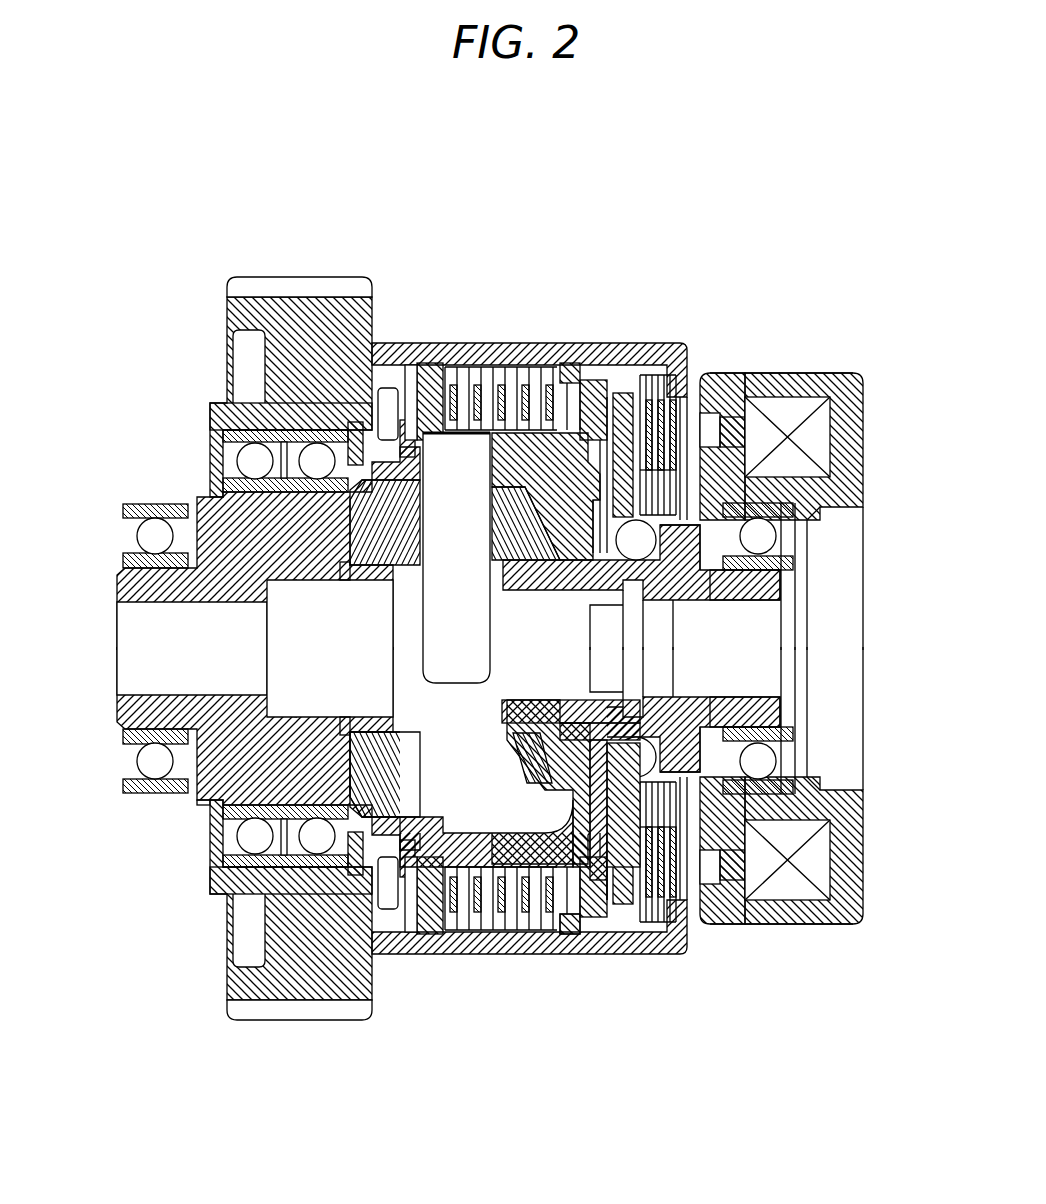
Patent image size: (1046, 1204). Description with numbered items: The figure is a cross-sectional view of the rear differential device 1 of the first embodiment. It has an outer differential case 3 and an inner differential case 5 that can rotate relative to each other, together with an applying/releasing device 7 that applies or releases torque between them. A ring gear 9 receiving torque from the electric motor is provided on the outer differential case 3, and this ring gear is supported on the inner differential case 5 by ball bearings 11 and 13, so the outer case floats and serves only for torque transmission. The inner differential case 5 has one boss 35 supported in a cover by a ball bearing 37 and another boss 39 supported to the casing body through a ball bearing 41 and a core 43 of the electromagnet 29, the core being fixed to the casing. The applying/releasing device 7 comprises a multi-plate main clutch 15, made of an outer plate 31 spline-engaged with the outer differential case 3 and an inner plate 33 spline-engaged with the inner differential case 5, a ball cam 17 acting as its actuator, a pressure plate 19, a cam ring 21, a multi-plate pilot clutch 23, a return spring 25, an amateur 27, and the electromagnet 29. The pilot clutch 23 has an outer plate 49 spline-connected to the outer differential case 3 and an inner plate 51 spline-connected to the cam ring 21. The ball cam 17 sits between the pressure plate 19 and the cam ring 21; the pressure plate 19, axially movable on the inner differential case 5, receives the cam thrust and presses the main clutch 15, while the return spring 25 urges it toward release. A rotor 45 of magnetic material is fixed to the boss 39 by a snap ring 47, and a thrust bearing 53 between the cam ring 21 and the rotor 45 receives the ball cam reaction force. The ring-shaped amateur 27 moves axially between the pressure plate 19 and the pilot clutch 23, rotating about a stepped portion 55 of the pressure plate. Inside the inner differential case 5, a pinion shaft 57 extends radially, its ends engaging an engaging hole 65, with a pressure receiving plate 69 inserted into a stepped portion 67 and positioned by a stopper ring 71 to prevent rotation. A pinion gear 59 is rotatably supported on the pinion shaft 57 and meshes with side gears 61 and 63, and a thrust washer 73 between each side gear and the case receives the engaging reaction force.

The rear differential device 1 is at (524, 220).
The outer differential case 3 is at (476, 344).
The inner differential case 5 is at (560, 363).
The applying/releasing device 7 is at (708, 270).
The ring gear 9 is at (275, 277).
The ball bearing 11 is at (210, 405).
The ball bearing 13 is at (260, 396).
The main clutch 15 is at (500, 345).
The ball cam 17 is at (665, 580).
The pressure plate 19 is at (590, 380).
The cam ring 21 is at (690, 582).
The pilot clutch 23 is at (667, 350).
The return spring 25 is at (615, 898).
The amateur 27 is at (609, 902).
The electromagnet 29 is at (825, 415).
The outer plate 31 is at (452, 366).
The inner plate 33 is at (430, 363).
The boss 35 is at (123, 578).
The ball bearing 37 is at (138, 505).
The boss 39 is at (775, 587).
The ball bearing 41 is at (796, 540).
The core 43 is at (847, 437).
The rotor 45 is at (735, 373).
The snap ring 47 is at (716, 594).
The outer plate 49 is at (646, 365).
The inner plate 51 is at (623, 393).
The thrust bearing 53 is at (745, 440).
The stepped portion 55 is at (810, 372).
The pinion shaft 57 is at (470, 630).
The pinion gear 59 is at (297, 603).
The side gear 61 is at (405, 768).
The side gear 63 is at (527, 780).
The engaging hole 65 is at (492, 462).
The stepped portion 67 is at (437, 447).
The pressure receiving plate 69 is at (388, 388).
The stopper ring 71 is at (357, 421).
The thrust washer 73 is at (207, 802).